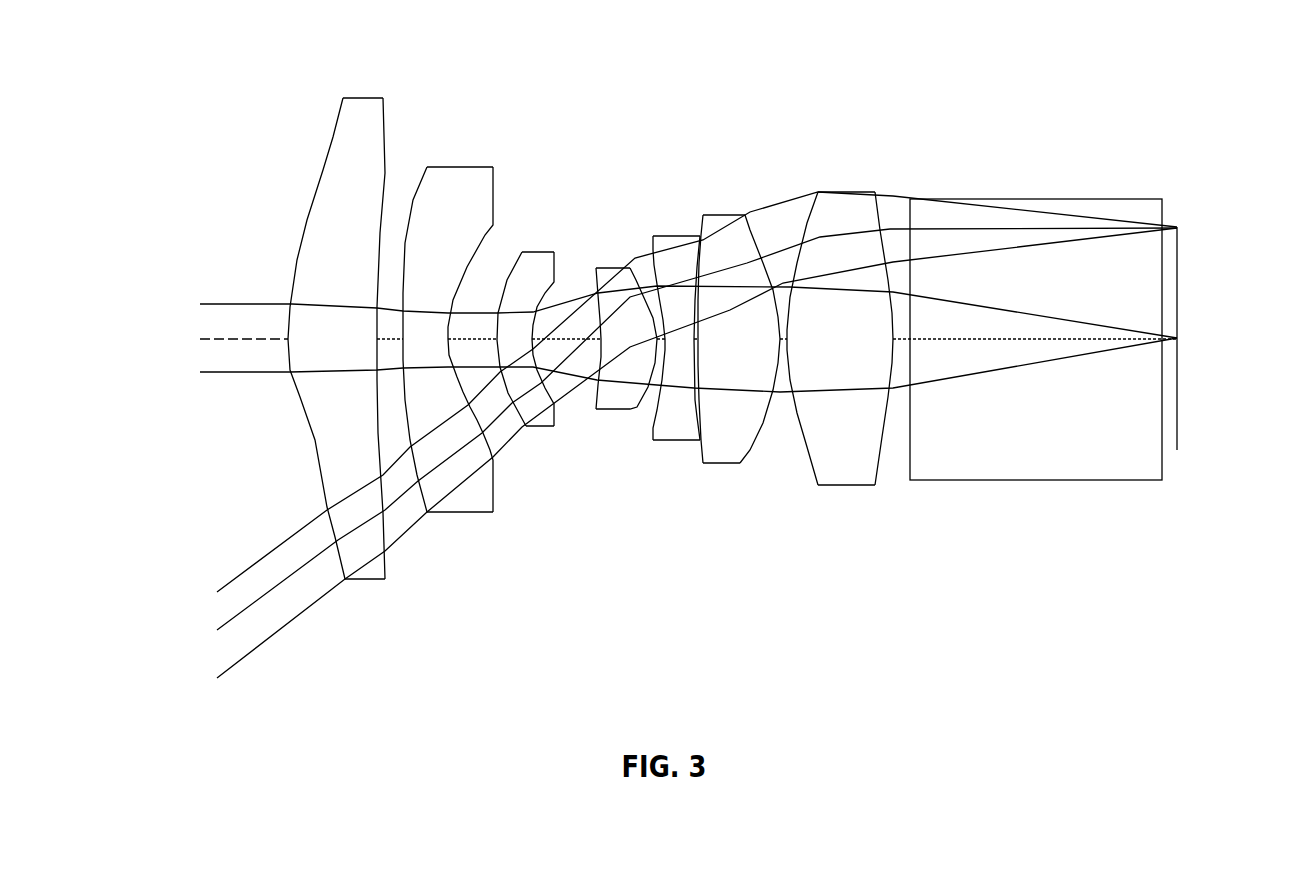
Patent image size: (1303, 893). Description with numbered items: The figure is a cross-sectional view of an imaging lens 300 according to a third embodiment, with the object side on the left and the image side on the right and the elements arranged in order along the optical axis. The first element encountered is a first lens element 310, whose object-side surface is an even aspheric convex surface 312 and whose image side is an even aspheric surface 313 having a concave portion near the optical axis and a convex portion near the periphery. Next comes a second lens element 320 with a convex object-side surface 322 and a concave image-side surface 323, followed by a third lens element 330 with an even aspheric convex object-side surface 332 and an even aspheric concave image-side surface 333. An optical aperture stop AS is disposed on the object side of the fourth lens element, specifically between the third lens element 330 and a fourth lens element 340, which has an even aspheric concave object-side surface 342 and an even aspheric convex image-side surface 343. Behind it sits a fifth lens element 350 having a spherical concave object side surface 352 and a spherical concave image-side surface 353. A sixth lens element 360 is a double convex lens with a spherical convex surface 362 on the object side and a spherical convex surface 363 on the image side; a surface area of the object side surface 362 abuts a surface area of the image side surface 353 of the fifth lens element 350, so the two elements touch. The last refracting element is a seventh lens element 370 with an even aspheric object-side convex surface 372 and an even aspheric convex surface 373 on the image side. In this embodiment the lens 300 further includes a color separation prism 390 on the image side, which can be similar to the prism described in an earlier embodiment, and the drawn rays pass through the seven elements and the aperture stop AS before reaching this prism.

The imaging lens 300 is at (1012, 64).
The first lens element 310 is at (332, 324).
The even aspheric convex surface 312 is at (323, 168).
The even aspheric surface 313 is at (380, 435).
The second lens element 320 is at (440, 351).
The convex object-side surface 322 is at (418, 487).
The concave image-side surface 323 is at (463, 410).
The third lens element 330 is at (519, 326).
The even aspheric convex object-side surface 332 is at (500, 293).
The even aspheric concave image-side surface 333 is at (533, 363).
The optical aperture stop AS is at (581, 293).
The fourth lens element 340 is at (601, 304).
The even aspheric concave object-side surface 342 is at (602, 315).
The even aspheric convex image-side surface 343 is at (637, 278).
The fifth lens element 350 is at (677, 368).
The spherical concave object side surface 352 is at (655, 408).
The spherical concave image-side surface 353 is at (693, 403).
The sixth lens element 360 is at (722, 326).
The spherical convex surface 362 is at (702, 456).
The spherical convex surface 363 is at (762, 237).
The seventh lens element 370 is at (854, 346).
The even aspheric object-side convex surface 372 is at (805, 458).
The even aspheric convex surface 373 is at (876, 463).
The color separation prism 390 is at (1041, 457).